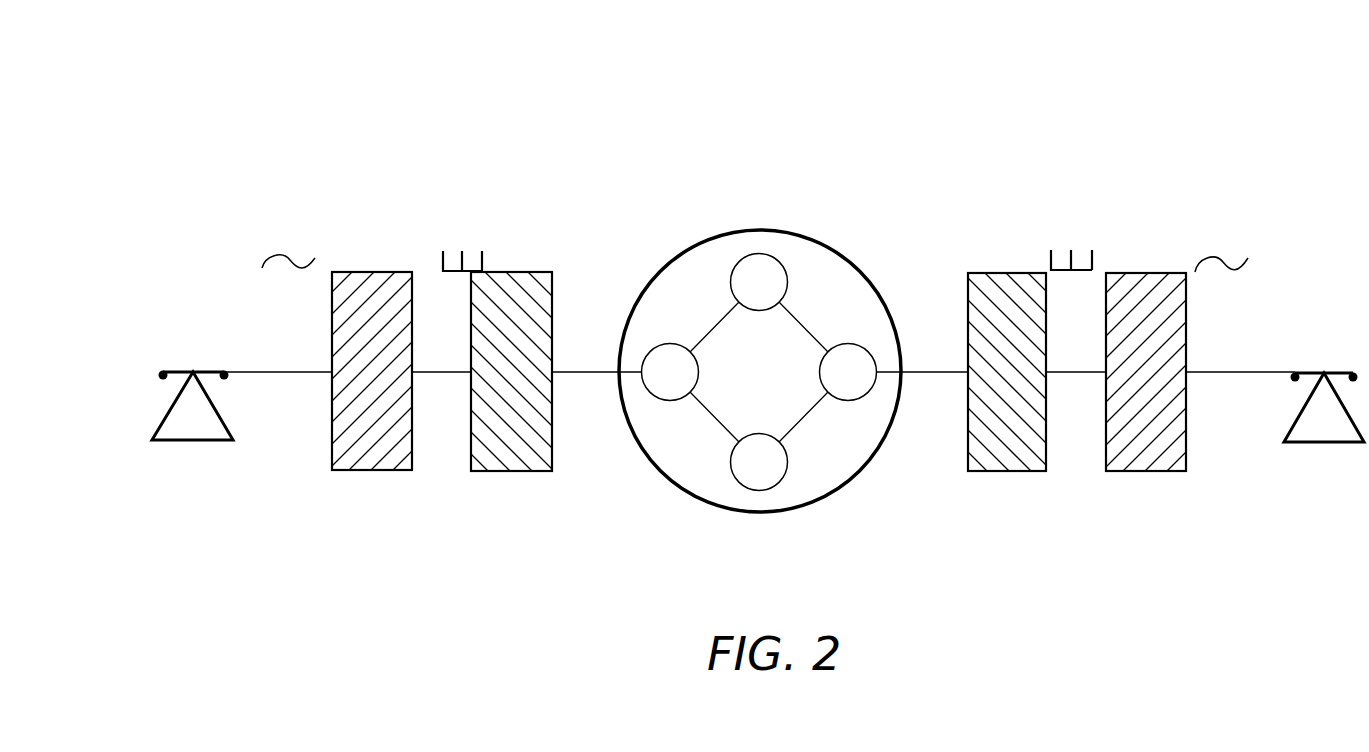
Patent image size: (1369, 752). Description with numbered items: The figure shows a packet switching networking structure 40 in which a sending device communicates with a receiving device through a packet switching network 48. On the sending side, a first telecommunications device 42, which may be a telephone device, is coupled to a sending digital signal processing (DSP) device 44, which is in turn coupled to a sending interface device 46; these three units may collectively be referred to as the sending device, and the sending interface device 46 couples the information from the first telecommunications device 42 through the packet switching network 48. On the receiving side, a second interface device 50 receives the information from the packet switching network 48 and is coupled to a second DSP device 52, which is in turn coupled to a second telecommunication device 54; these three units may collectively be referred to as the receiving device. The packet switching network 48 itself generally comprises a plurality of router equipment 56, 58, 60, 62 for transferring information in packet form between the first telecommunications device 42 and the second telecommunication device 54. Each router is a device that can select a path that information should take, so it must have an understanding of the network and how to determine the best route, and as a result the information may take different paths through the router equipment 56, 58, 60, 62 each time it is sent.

The packet switching networking structure 40 is at (242, 128).
The first telecommunications device 42 is at (193, 443).
The sending digital signal processing (DSP) device 44 is at (372, 272).
The sending interface device 46 is at (531, 272).
The packet switching network 48 is at (845, 485).
The second interface device 50 is at (988, 273).
The second DSP device 52 is at (1145, 273).
The second telecommunication device 54 is at (1334, 445).
The router equipment 56 is at (730, 285).
The router equipment 58 is at (672, 400).
The router equipment 60 is at (788, 462).
The router equipment 62 is at (845, 343).